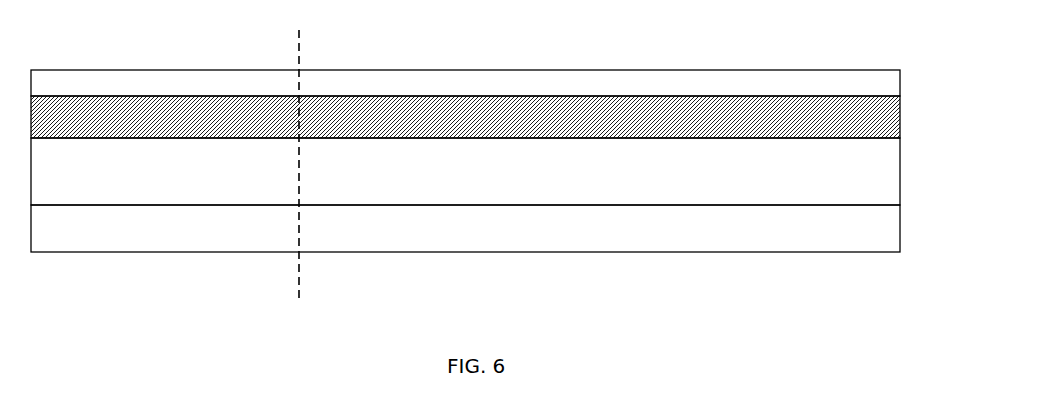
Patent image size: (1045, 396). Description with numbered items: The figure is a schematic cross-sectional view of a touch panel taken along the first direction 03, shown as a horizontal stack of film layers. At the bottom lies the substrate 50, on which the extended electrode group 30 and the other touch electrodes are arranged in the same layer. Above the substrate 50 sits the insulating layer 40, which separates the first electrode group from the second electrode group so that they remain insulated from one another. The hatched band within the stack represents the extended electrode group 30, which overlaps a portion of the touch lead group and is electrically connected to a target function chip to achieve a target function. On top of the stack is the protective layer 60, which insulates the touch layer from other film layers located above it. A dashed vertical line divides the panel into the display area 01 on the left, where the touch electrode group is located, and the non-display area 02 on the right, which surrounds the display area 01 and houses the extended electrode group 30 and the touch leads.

The protective layer 60 is at (875, 85).
The extended electrode group 30 is at (236, 122).
The insulating layer 40 is at (875, 161).
The substrate 50 is at (875, 243).
The display area 01 is at (212, 270).
The non-display area 02 is at (356, 270).
The first direction 03 is at (928, 24).